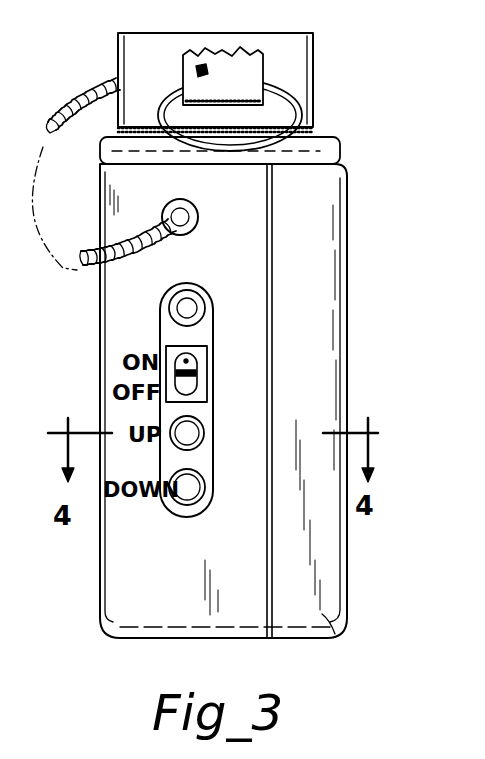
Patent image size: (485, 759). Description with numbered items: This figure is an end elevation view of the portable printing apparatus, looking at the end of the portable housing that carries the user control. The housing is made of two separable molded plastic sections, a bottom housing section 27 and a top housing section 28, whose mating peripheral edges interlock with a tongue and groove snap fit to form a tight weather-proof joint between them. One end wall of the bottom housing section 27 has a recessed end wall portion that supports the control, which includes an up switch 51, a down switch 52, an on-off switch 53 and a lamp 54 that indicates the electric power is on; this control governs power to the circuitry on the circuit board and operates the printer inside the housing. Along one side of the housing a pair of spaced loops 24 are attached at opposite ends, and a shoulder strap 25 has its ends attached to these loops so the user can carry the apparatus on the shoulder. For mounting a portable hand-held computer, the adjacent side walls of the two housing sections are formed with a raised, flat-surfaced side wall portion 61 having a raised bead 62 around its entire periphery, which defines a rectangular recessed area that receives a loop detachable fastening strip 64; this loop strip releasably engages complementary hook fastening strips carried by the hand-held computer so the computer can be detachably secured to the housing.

The spaced loops 24 is at (295, 118).
The shoulder strap 25 is at (240, 72).
The bottom housing section 27 is at (150, 603).
The top housing section 28 is at (318, 628).
The up switch 51 is at (190, 435).
The down switch 52 is at (190, 495).
The on-off switch 53 is at (187, 390).
The lamp 54 is at (178, 304).
The side wall portion 61 is at (110, 82).
The raised bead 62 is at (100, 142).
The loop detachable fastening strip 64 is at (322, 132).